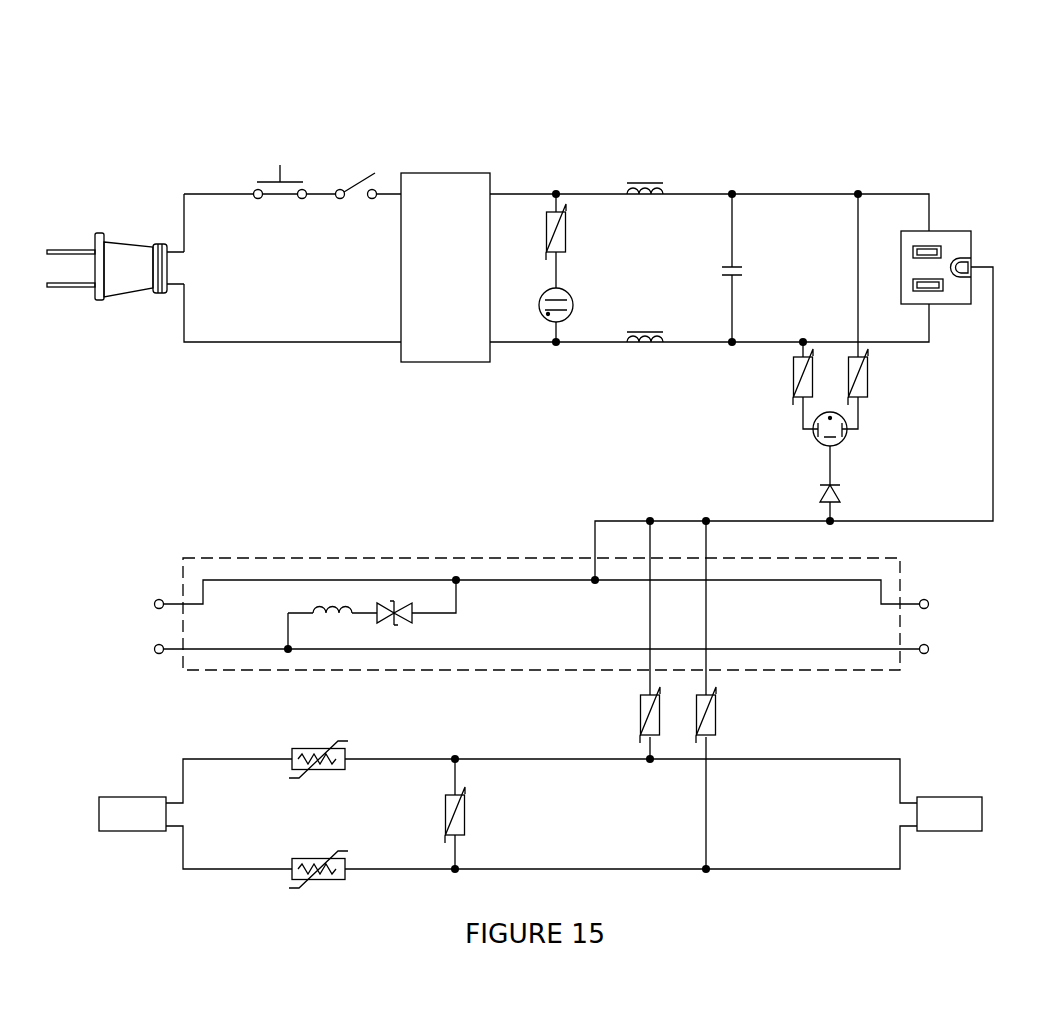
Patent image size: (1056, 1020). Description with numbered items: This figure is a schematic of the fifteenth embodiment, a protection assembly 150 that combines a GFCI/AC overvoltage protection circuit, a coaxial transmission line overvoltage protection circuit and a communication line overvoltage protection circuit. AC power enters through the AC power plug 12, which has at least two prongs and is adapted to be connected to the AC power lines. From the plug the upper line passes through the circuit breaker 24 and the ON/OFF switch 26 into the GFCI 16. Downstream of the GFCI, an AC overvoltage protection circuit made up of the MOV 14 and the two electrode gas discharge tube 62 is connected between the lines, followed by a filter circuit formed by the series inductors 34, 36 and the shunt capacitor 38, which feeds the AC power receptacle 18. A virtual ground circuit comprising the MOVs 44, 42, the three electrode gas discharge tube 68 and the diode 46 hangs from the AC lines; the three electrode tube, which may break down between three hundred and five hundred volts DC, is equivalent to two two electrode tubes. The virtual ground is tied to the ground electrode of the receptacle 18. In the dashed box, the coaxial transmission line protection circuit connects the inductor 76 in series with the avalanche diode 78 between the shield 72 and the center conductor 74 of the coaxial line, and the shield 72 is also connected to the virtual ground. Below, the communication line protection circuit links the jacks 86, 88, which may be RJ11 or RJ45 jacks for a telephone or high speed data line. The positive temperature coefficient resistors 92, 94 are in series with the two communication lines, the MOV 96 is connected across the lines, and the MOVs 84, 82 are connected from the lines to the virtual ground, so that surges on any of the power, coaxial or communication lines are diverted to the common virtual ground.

The surge protector circuit 150 is at (420, 106).
The AC power plug 12 is at (130, 291).
The circuit breaker 24 is at (280, 172).
The ON/OFF switch 26 is at (355, 183).
The GFCI 16 is at (433, 280).
The MOV 14 is at (566, 232).
The two electrode gas discharge tube 62 is at (573, 300).
The inductor 34 is at (651, 182).
The inductor 36 is at (652, 330).
The capacitor 38 is at (722, 262).
The AC power receptacle 18 is at (971, 231).
The MOV 44 is at (793, 378).
The MOV 42 is at (870, 378).
The three electrode gas discharge tube 68 is at (848, 438).
The diode 46 is at (822, 492).
The shield 72 is at (155, 602).
The center conductor 74 is at (155, 652).
The inductor 76 is at (328, 605).
The avalanche diode 78 is at (410, 605).
The MOV 84 is at (640, 718).
The MOV 82 is at (718, 715).
The jack 86 is at (98, 797).
The jack 88 is at (983, 797).
The positive temperature coefficient resistor 92 is at (293, 750).
The positive temperature coefficient resistor 94 is at (292, 860).
The MOV 96 is at (467, 815).